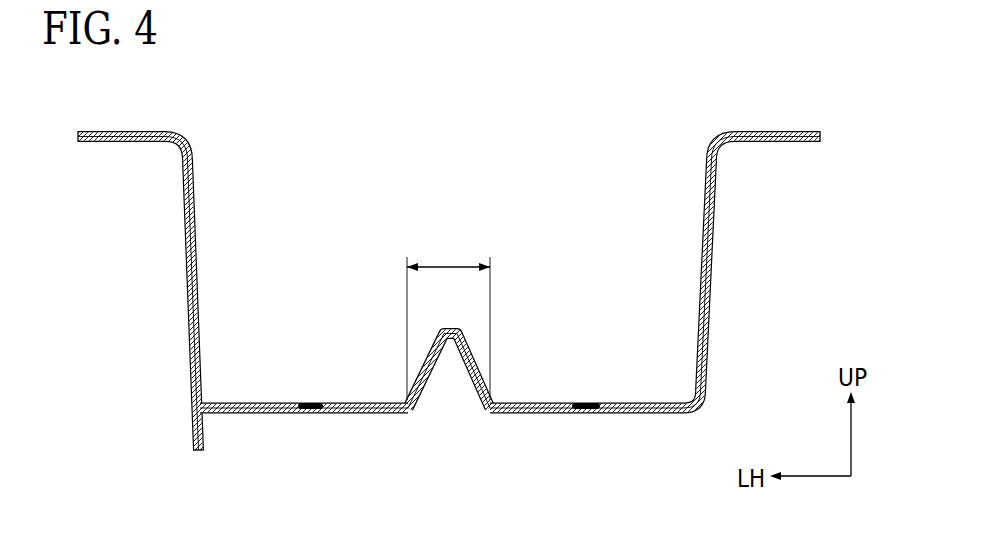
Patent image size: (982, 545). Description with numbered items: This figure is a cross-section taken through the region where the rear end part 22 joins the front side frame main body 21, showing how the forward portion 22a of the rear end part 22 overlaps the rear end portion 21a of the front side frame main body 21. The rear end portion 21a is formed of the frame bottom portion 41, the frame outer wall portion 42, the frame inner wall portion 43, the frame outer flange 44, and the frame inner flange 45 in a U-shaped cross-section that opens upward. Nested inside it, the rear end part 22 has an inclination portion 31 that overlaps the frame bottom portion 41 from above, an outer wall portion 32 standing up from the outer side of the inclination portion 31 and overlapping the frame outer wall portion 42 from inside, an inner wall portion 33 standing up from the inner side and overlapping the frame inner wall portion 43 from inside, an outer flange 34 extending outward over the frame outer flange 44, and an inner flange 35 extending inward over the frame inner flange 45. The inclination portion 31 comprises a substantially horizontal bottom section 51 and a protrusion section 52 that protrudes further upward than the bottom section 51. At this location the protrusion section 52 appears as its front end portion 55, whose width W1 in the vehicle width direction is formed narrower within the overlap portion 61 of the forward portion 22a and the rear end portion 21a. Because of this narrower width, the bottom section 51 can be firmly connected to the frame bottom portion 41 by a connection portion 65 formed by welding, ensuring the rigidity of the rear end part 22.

The front side frame main body 21 is at (182, 233).
The rear end portion of the front side frame main body 21a is at (132, 305).
The rear end part 22 is at (262, 415).
The forward portion of the rear end part 22a is at (450, 451).
The inclination portion 31 is at (450, 316).
The outer wall portion 32 is at (140, 305).
The inner wall portion 33 is at (703, 252).
The outer flange 34 is at (132, 139).
The inner flange 35 is at (768, 128).
The frame bottom portion 41 is at (450, 316).
The frame outer wall portion 42 is at (140, 305).
The frame inner wall portion 43 is at (739, 276).
The frame outer flange 44 is at (123, 145).
The frame inner flange 45 is at (784, 143).
The bottom section 51 is at (355, 397).
The protrusion section 52 is at (449, 371).
The front end portion 55 is at (431, 304).
The overlap portion 61 is at (450, 451).
The connection portion 65 is at (313, 403).
The width of the front end portion W1 is at (458, 267).